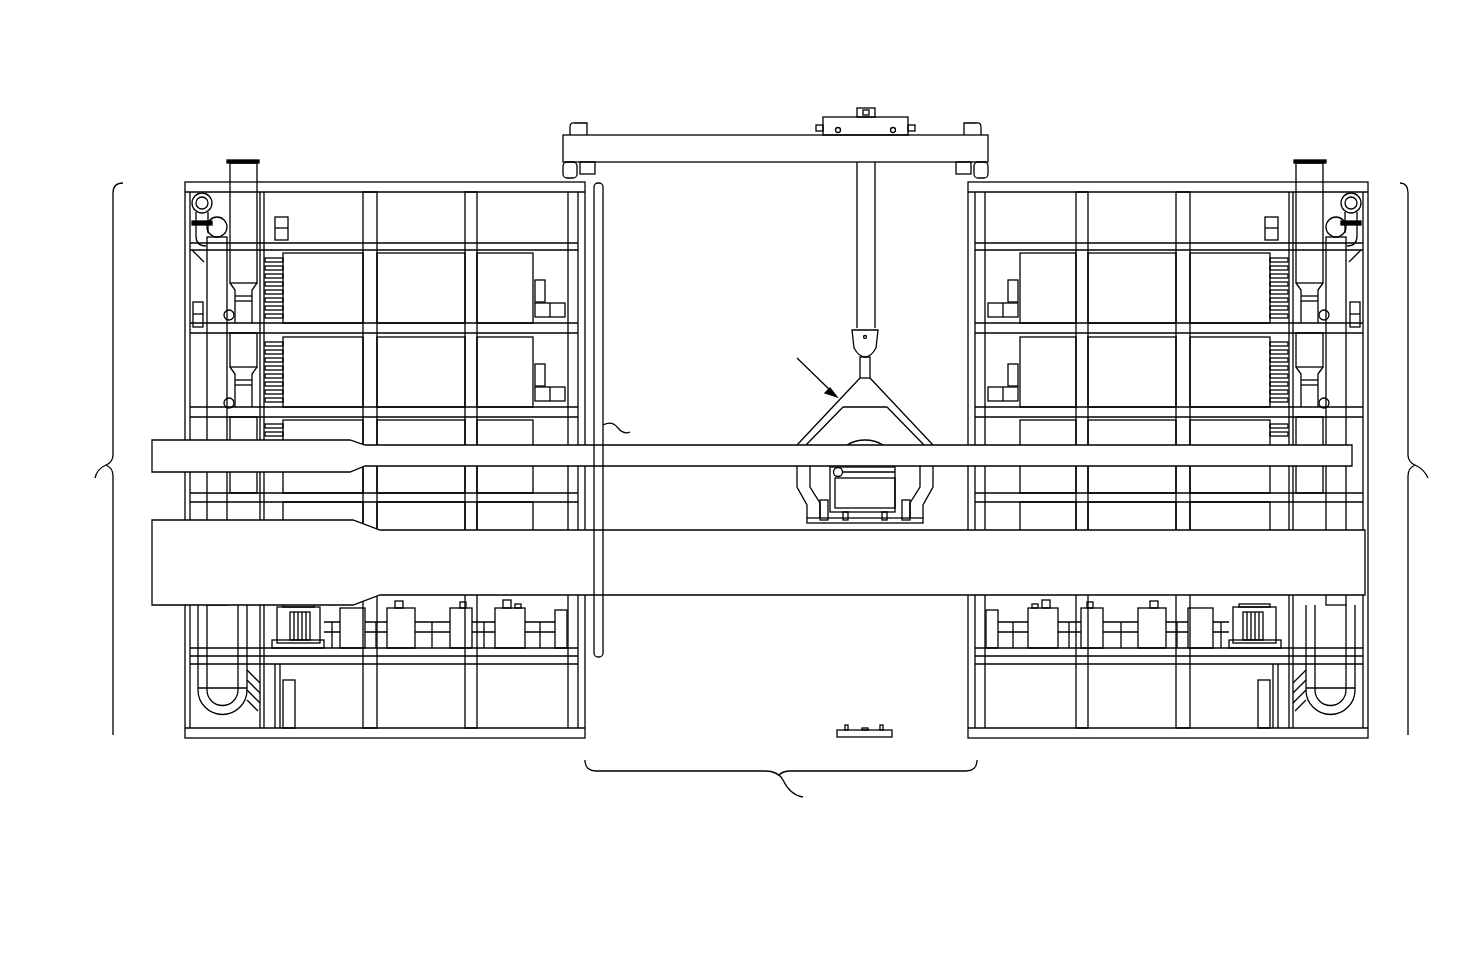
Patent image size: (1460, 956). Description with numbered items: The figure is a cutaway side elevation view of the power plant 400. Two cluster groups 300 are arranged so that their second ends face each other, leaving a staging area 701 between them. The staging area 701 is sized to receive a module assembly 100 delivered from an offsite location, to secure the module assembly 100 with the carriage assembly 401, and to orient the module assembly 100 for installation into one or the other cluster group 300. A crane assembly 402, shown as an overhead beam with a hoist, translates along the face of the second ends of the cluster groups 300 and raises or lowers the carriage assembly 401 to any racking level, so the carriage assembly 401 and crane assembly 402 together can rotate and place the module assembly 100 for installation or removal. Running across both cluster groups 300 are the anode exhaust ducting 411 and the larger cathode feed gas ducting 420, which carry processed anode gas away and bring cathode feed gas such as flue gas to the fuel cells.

The module assembly 100 is at (830, 478).
The cluster group 300 is at (396, 182).
The power plant 400 is at (198, 95).
The carriage assembly 401 is at (910, 418).
The crane assembly 402 is at (888, 117).
The anode exhaust ducting 411 is at (152, 450).
The cathode feed gas ducting 420 is at (152, 598).
The staging area 701 is at (781, 770).